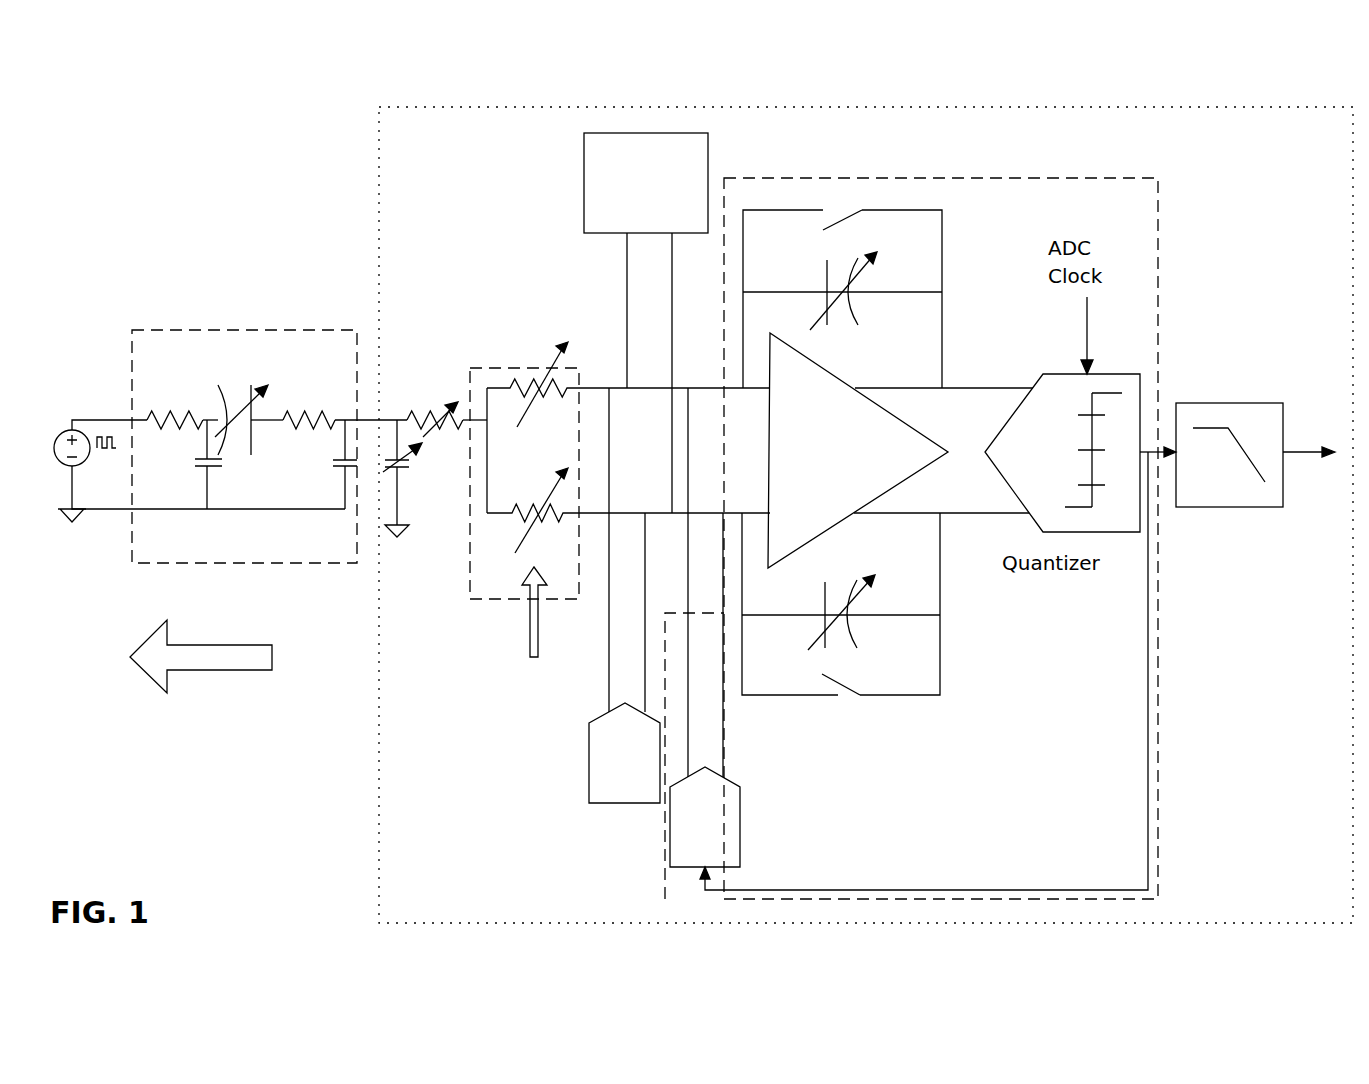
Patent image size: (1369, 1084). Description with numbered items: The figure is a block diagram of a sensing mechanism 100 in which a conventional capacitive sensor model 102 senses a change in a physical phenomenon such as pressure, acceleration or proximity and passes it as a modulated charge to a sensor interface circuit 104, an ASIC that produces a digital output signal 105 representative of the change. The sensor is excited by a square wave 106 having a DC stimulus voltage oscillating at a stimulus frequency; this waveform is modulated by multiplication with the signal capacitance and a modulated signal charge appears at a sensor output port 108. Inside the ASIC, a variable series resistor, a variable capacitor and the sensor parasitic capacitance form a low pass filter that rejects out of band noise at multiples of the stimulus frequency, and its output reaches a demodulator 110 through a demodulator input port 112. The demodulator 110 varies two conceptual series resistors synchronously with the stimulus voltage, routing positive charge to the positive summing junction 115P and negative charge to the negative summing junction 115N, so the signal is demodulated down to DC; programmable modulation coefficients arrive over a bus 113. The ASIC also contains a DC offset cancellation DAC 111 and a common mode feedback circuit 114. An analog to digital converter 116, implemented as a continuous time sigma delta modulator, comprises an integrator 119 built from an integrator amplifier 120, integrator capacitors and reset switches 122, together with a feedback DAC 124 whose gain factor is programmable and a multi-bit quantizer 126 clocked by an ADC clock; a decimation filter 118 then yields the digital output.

The sensing mechanism 100 is at (152, 135).
The capacitive sensor model 102 is at (220, 330).
The sensor interface circuit 104 is at (888, 107).
The digital output signal 105 is at (1298, 452).
The square wave 106 is at (108, 430).
The sensor output port 108 is at (373, 420).
The demodulator 110 is at (572, 368).
The DC offset cancellation digital to analog converter 111 is at (590, 783).
The demodulator input port 112 is at (467, 420).
The bus 113 is at (528, 633).
The common mode feedback circuit 114 is at (628, 133).
The negative integrator summing junction 115N is at (757, 387).
The positive integrator summing junction 115P is at (755, 513).
The analog to digital converter 116 is at (1083, 178).
The decimation filter 118 is at (1288, 390).
The integrator 119 is at (942, 647).
The integrator amplifier 120 is at (888, 378).
The reset switches 122 is at (840, 207).
The feedback DAC 124 is at (743, 875).
The multi-bit quantizer 126 is at (1112, 533).